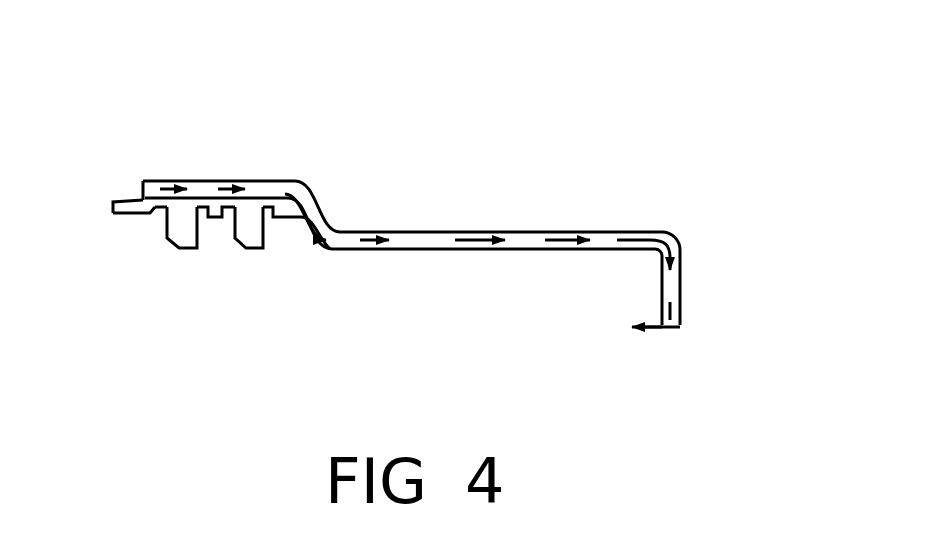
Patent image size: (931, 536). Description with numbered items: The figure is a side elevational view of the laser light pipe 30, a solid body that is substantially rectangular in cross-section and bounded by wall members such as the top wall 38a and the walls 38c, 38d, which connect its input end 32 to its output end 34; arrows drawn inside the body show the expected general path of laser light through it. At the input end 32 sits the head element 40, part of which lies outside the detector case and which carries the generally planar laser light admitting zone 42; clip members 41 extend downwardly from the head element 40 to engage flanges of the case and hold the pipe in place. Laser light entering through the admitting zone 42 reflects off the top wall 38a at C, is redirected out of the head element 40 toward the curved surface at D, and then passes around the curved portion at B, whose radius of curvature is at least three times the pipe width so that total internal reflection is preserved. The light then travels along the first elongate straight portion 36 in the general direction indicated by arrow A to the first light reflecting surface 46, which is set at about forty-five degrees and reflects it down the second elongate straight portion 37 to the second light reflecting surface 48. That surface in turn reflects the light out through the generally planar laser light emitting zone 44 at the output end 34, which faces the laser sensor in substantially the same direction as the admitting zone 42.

The laser light pipe 30 is at (243, 127).
The input end 32 is at (113, 214).
The output end 34 is at (675, 322).
The first elongate straight portion 36 is at (575, 232).
The second elongate straight portion 37 is at (680, 282).
The top wall 38a is at (393, 232).
The wall member 38c is at (400, 252).
The wall member 38d is at (513, 243).
The head element 40 is at (158, 182).
The clip members 41 is at (258, 250).
The laser light admitting zone 42 is at (140, 190).
The laser light emitting zone 44 is at (668, 327).
The first light reflecting surface 46 is at (672, 237).
The second light reflecting surface 48 is at (673, 323).
The arrow indicating general orientation of light travel A is at (457, 252).
The curved portion B is at (475, 232).
The location of reflection off top wall C is at (318, 195).
The location of curved surface reflection D is at (305, 250).